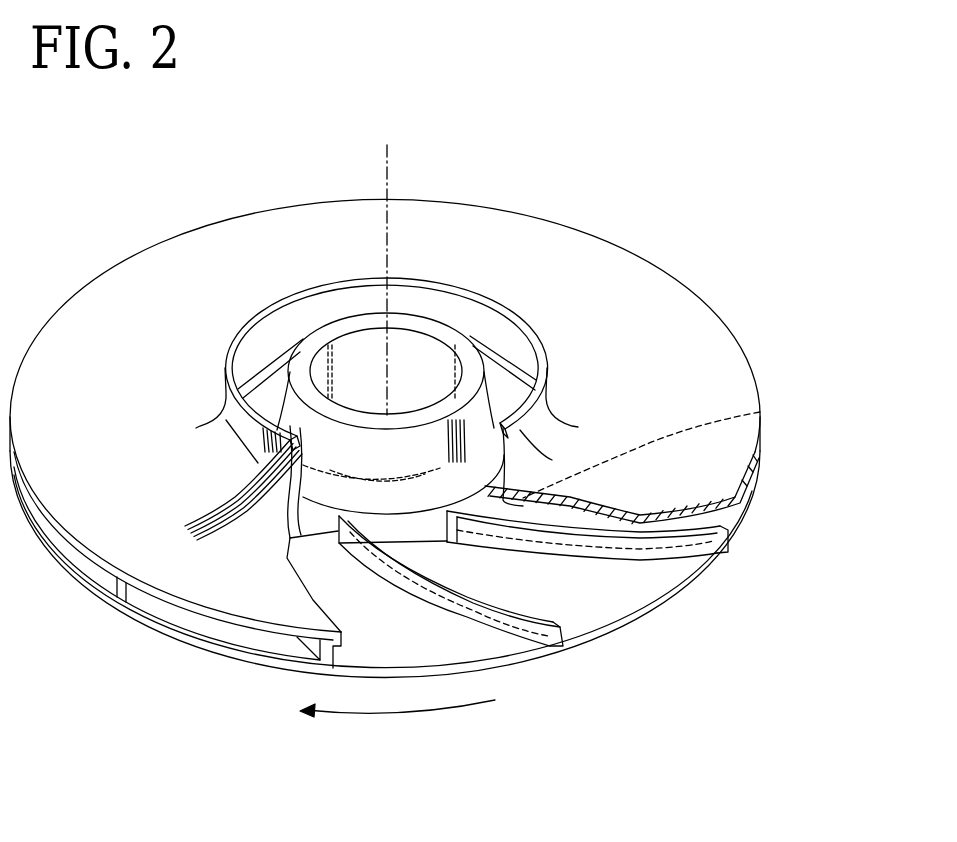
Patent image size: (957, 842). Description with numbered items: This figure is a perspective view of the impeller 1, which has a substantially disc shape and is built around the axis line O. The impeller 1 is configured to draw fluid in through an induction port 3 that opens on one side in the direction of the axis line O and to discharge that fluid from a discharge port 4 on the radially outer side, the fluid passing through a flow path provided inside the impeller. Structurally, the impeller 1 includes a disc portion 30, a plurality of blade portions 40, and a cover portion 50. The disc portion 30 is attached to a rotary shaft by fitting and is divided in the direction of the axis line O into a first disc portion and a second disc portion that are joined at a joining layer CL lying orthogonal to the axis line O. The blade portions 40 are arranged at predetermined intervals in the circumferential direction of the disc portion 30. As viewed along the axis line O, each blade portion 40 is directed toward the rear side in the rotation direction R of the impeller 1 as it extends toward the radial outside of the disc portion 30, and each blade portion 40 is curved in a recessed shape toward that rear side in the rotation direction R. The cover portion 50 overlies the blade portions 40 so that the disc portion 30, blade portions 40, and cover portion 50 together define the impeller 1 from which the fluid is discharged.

The impeller 1 is at (588, 216).
The induction port 3 is at (452, 307).
The discharge port 4 is at (667, 575).
The disc portion 30 is at (358, 443).
The blade portion 40 is at (633, 548).
The cover portion 50 is at (623, 345).
The axis line O is at (390, 172).
The joining layer CL is at (762, 413).
The rotation direction R is at (403, 725).